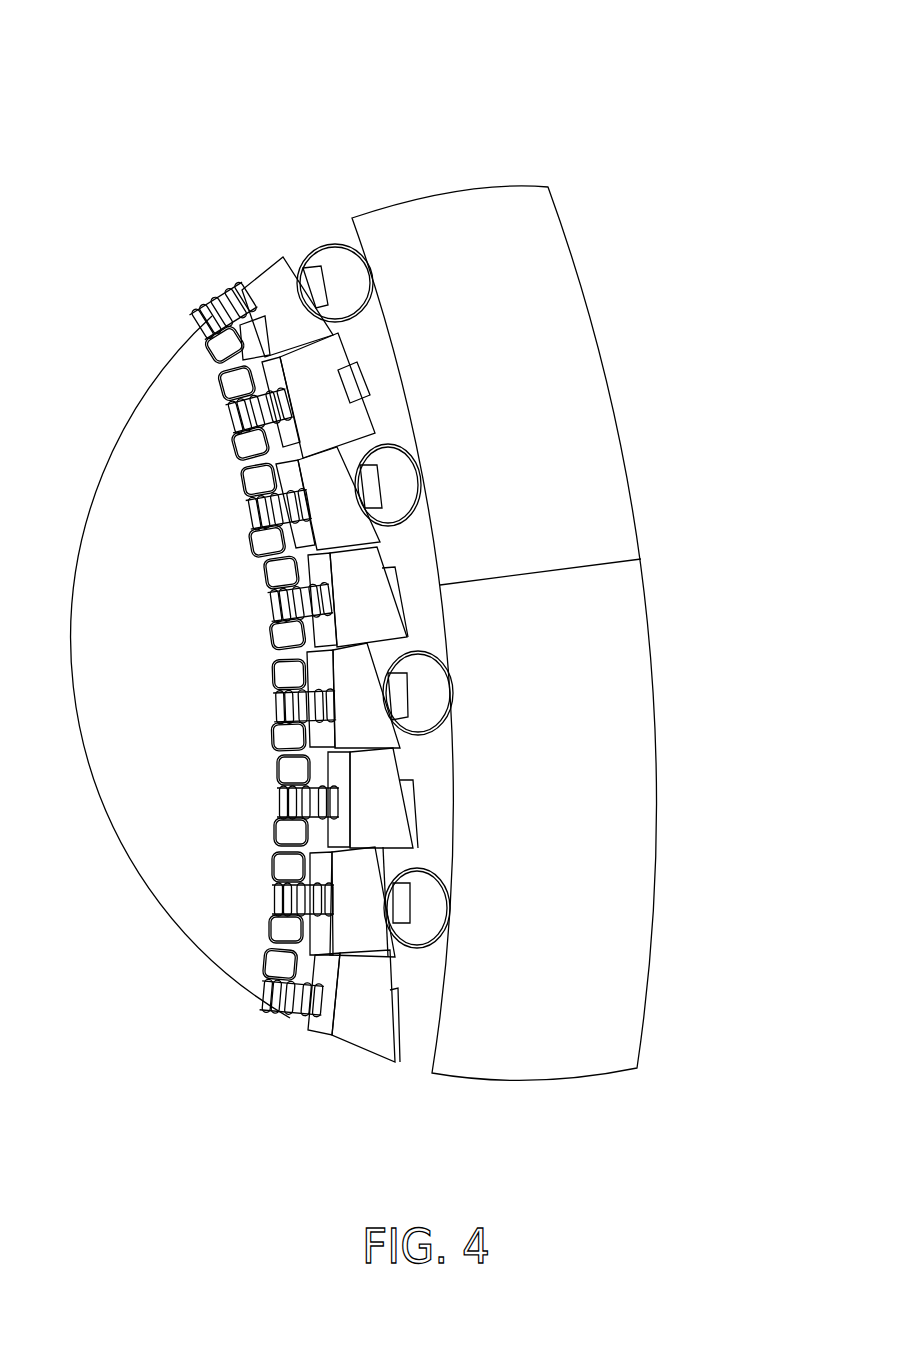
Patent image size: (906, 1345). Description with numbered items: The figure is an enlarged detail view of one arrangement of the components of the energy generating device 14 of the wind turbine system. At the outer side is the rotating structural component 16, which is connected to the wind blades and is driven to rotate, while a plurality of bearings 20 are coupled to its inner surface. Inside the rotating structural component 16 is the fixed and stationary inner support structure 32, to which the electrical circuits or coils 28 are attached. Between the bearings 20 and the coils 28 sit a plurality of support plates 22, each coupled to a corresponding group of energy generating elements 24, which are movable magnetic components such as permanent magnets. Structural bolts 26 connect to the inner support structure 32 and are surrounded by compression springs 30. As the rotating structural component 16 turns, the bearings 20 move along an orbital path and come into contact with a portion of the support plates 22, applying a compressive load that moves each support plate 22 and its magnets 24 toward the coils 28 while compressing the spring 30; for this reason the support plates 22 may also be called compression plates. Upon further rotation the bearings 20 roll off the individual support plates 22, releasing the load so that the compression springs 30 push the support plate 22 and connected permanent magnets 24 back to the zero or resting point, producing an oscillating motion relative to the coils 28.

The energy generating device 14 is at (181, 82).
The rotating structural component 16 is at (548, 457).
The bearing 20 is at (423, 907).
The support plate 22 is at (325, 392).
The energy generating element 24 is at (333, 725).
The structural bolt 26 is at (320, 267).
The coil 28 is at (209, 377).
The compression spring 30 is at (459, 635).
The inner support structure 32 is at (192, 793).